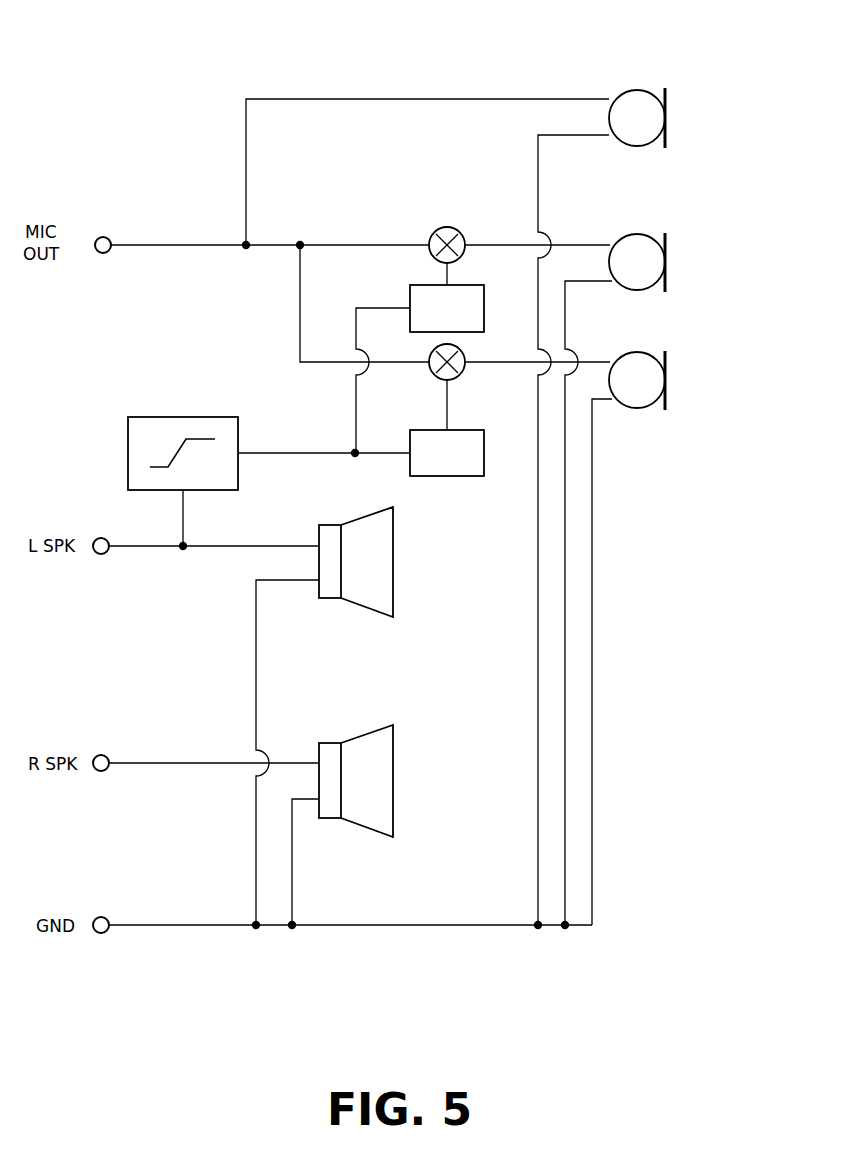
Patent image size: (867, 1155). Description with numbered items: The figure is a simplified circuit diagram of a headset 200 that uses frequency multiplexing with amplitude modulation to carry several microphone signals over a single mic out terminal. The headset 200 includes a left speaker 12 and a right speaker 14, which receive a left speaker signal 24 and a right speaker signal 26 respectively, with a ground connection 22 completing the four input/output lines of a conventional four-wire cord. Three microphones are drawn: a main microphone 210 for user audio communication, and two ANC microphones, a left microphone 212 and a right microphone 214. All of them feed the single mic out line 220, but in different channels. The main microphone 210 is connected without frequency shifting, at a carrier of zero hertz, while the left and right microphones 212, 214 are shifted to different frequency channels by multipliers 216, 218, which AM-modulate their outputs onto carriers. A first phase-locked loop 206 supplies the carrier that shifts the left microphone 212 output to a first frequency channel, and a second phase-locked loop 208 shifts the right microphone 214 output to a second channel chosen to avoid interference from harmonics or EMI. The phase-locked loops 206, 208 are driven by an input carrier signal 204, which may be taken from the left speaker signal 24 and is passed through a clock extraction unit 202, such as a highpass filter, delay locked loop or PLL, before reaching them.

The headset 200 is at (190, 58).
The clock extraction unit 202 is at (172, 417).
The input carrier signal 204 is at (308, 453).
The first phase-locked loop 206 is at (484, 308).
The second phase-locked loop 208 is at (447, 476).
The main microphone 210 is at (683, 91).
The left microphone 212 is at (685, 250).
The right microphone 214 is at (683, 369).
The multiplier 216 is at (446, 227).
The multiplier 218 is at (462, 373).
The microphone output line 220 is at (153, 245).
The left speaker 12 is at (414, 603).
The right speaker 14 is at (414, 771).
The ground connection 22 is at (175, 925).
The left speaker signal 24 is at (226, 548).
The right speaker signal 26 is at (158, 763).